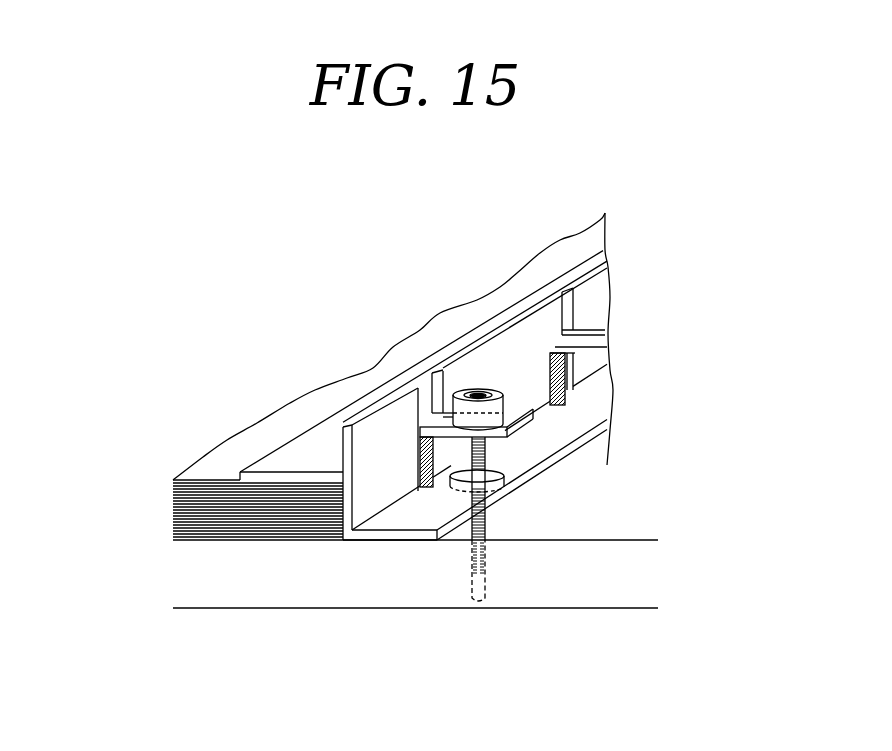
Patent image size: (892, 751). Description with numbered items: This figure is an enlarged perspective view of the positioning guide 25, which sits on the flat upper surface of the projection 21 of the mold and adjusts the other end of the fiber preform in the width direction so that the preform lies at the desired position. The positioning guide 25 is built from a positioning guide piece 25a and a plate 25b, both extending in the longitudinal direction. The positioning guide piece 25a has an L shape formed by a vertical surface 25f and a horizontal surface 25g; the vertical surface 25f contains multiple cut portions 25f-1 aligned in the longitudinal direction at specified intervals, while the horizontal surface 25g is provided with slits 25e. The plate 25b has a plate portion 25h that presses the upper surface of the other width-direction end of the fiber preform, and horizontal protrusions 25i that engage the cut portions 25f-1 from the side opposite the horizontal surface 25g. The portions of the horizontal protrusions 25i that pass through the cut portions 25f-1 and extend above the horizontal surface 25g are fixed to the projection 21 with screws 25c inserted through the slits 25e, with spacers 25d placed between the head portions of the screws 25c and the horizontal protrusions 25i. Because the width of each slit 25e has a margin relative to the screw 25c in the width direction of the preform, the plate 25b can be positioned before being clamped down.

The projection 21 is at (323, 582).
The positioning guide 25 is at (471, 292).
The positioning guide piece 25a is at (371, 378).
The plate 25b is at (300, 422).
The screw 25c is at (505, 392).
The spacer 25d is at (530, 414).
The slit 25e is at (505, 478).
The vertical surface 25f is at (385, 470).
The cut portion 25f-1 is at (421, 364).
The horizontal surface 25g is at (432, 540).
The plate portion 25h is at (292, 460).
The horizontal protrusion 25i is at (522, 420).